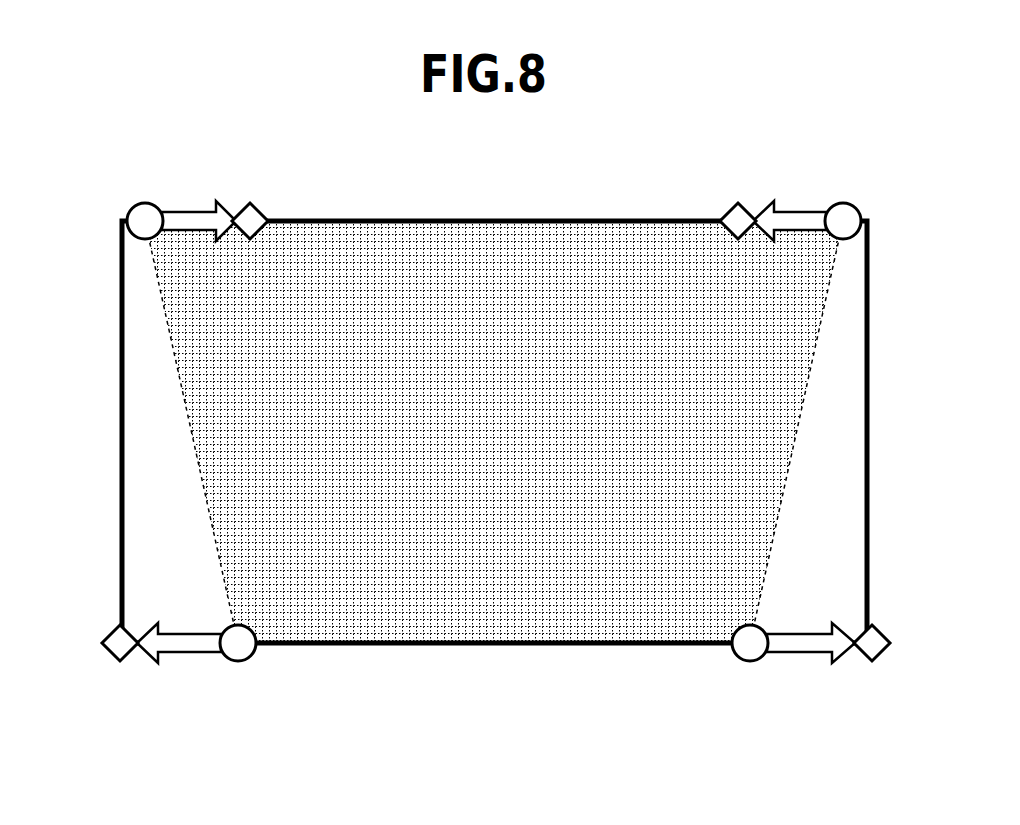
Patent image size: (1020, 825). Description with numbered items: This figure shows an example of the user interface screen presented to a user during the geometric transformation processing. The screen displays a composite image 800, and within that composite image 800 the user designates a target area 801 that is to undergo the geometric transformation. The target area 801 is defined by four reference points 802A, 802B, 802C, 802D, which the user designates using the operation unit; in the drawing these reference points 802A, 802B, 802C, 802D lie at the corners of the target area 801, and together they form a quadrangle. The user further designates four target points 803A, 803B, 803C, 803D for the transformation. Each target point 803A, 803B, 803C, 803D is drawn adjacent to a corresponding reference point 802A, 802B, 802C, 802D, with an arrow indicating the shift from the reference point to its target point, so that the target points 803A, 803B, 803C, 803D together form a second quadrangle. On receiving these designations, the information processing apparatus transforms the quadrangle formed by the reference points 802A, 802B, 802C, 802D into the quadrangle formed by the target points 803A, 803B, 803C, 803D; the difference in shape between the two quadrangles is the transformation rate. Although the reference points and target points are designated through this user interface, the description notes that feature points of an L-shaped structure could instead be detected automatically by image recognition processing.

The composite image 800 is at (119, 405).
The target area 801 is at (808, 371).
The reference point 802A is at (147, 200).
The reference point 802B is at (845, 201).
The reference point 802C is at (748, 662).
The reference point 802D is at (234, 662).
The target point 803A is at (293, 181).
The target point 803B is at (729, 203).
The target point 803C is at (866, 660).
The target point 803D is at (113, 656).